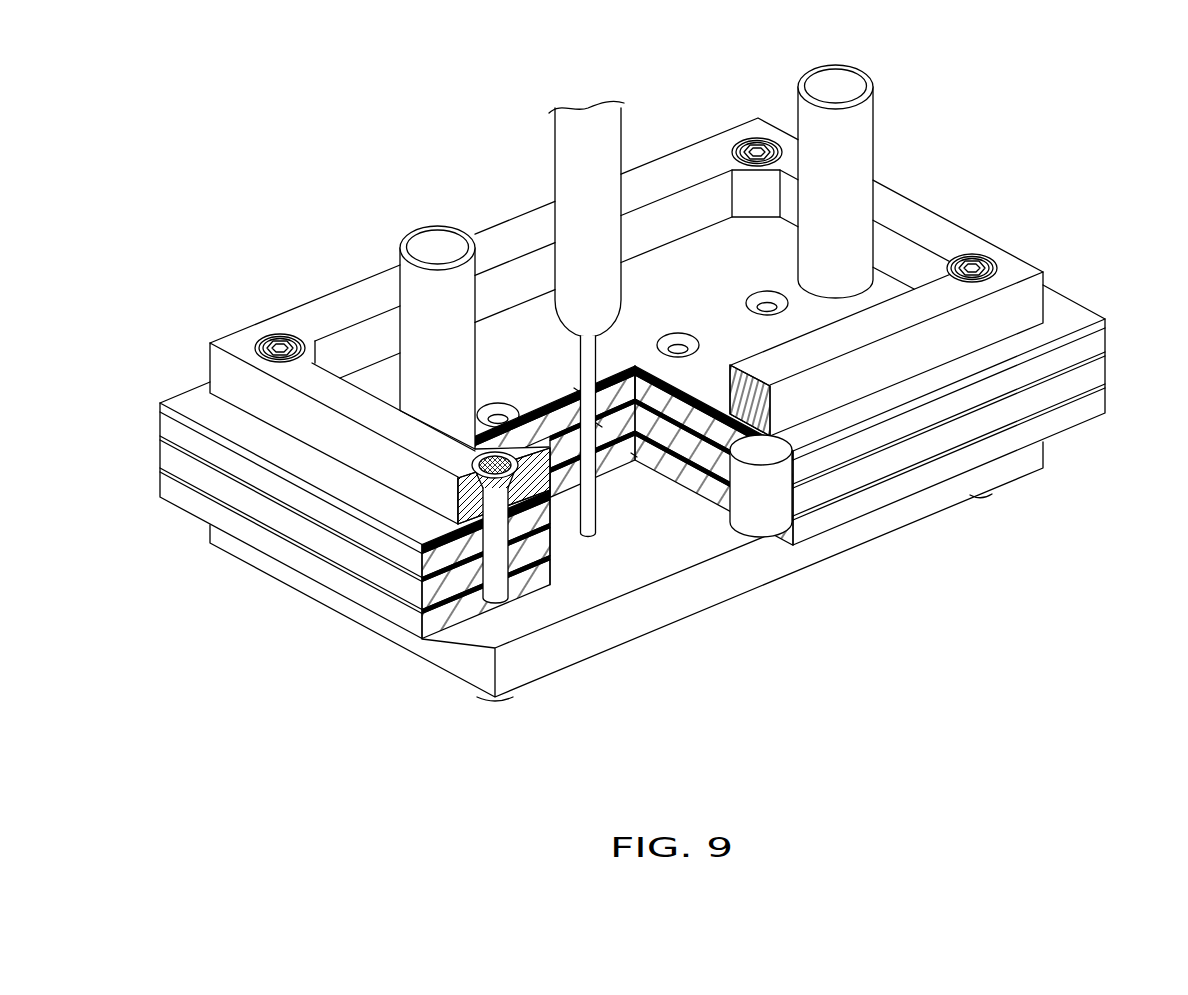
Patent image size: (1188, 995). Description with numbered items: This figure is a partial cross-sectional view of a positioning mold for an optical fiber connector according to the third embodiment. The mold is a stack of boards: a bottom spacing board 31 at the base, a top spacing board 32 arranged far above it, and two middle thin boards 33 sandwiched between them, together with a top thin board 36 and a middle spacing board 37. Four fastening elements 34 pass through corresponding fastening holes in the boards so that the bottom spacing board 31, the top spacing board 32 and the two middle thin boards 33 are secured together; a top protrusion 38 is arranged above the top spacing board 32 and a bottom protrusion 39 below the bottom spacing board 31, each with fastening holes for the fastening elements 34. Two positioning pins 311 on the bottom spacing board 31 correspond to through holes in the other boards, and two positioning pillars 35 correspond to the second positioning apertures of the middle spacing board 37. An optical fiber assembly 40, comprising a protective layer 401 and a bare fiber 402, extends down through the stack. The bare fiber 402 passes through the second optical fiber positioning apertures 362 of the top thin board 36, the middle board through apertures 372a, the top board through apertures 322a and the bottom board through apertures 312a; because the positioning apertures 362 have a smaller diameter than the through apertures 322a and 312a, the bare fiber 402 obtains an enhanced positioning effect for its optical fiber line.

The bottom spacing board 31 is at (1104, 409).
The top spacing board 32 is at (1104, 337).
The middle thin board 33 is at (1104, 353).
The fastening element 34 is at (500, 587).
The positioning pillar 35 is at (757, 493).
The top thin board 36 is at (1104, 319).
The middle spacing board 37 is at (1104, 371).
The top protrusion 38 is at (1035, 297).
The bottom protrusion 39 is at (1013, 470).
The optical fiber assembly 40 is at (471, 122).
The protective layer 401 is at (556, 148).
The bare fiber 402 is at (586, 348).
The positioning pin 311 is at (874, 135).
The second optical fiber positioning aperture 362 is at (678, 345).
The middle board through aperture 372a is at (634, 455).
The bottom board through aperture 312a is at (599, 425).
The top board through aperture 322a is at (577, 390).